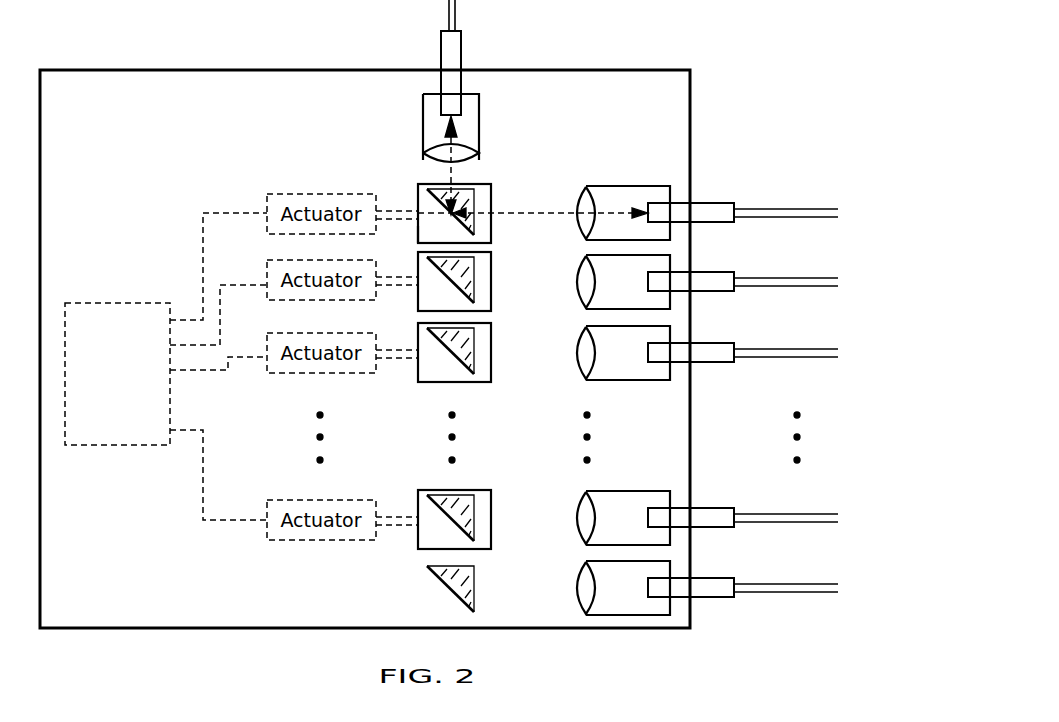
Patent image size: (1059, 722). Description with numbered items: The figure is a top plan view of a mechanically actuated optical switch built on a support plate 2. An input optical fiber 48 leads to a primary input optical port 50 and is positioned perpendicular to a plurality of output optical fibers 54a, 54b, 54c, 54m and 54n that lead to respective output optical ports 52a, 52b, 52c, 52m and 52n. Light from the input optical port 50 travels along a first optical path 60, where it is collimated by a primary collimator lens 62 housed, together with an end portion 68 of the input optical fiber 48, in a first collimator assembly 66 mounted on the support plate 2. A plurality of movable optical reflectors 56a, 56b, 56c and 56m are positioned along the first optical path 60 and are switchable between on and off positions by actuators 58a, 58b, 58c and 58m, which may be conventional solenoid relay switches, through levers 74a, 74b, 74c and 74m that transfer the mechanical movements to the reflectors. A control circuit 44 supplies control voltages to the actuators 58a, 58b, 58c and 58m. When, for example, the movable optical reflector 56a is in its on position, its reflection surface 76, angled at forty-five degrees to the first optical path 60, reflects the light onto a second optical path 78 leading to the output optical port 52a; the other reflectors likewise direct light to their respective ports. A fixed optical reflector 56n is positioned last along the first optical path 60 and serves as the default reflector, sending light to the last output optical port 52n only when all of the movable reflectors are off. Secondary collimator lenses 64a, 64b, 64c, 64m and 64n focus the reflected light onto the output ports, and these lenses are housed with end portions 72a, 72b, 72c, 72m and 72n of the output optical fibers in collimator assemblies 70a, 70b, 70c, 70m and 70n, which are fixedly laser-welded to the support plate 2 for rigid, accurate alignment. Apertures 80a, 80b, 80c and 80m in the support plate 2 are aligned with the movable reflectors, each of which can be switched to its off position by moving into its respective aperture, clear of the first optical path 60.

The support plate 2 is at (202, 80).
The control circuit 44 is at (124, 316).
The input optical fiber 48 is at (461, 17).
The input optical port 50 is at (464, 119).
The output optical port 52a is at (645, 205).
The output optical port 52b is at (652, 283).
The output optical port 52c is at (652, 355).
The output optical port 52m is at (652, 519).
The last output optical port 52n is at (652, 589).
The output optical fiber 54a is at (788, 212).
The output optical fiber 54b is at (798, 282).
The output optical fiber 54c is at (798, 354).
The output optical fiber 54m is at (800, 520).
The output optical fiber 54n is at (800, 590).
The movable optical reflector 56a is at (470, 206).
The movable optical reflector 56b is at (470, 284).
The movable optical reflector 56c is at (470, 355).
The movable optical reflector 56m is at (470, 514).
The fixed optical reflector 56n is at (474, 583).
The actuator 58a is at (320, 198).
The actuator 58b is at (320, 262).
The actuator 58c is at (320, 335).
The actuator 58m is at (312, 500).
The first optical path 60 is at (449, 171).
The primary collimator lens 62 is at (466, 160).
The secondary collimator lens 64a is at (578, 208).
The secondary collimator lens 64b is at (578, 287).
The secondary collimator lens 64c is at (578, 358).
The secondary collimator lens 64m is at (578, 521).
The secondary collimator lens 64n is at (578, 590).
The first collimator assembly 66 is at (423, 120).
The end portion of the input optical fiber 68 is at (452, 107).
The collimator assembly 70a is at (605, 198).
The collimator assembly 70b is at (662, 270).
The collimator assembly 70c is at (620, 382).
The collimator assembly 70m is at (656, 497).
The collimator assembly 70n is at (640, 608).
The end portion of the output optical fiber 72a is at (660, 212).
The end portion of the output optical fiber 72b is at (690, 293).
The end portion of the output optical fiber 72c is at (690, 364).
The end portion of the output optical fiber 72m is at (690, 528).
The end portion of the output optical fiber 72n is at (690, 597).
The lever 74a is at (400, 209).
The lever 74b is at (400, 289).
The lever 74c is at (400, 360).
The lever 74m is at (408, 526).
The reflection surface 76 is at (417, 232).
The second optical path 78 is at (528, 222).
The aperture 80a is at (488, 243).
The aperture 80b is at (487, 310).
The aperture 80c is at (488, 383).
The aperture 80m is at (486, 493).